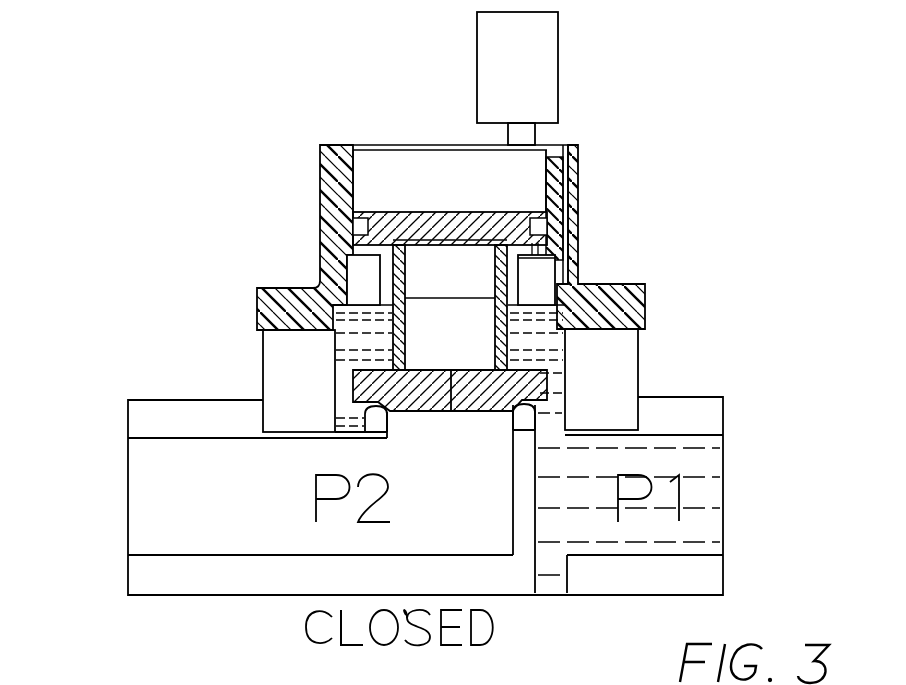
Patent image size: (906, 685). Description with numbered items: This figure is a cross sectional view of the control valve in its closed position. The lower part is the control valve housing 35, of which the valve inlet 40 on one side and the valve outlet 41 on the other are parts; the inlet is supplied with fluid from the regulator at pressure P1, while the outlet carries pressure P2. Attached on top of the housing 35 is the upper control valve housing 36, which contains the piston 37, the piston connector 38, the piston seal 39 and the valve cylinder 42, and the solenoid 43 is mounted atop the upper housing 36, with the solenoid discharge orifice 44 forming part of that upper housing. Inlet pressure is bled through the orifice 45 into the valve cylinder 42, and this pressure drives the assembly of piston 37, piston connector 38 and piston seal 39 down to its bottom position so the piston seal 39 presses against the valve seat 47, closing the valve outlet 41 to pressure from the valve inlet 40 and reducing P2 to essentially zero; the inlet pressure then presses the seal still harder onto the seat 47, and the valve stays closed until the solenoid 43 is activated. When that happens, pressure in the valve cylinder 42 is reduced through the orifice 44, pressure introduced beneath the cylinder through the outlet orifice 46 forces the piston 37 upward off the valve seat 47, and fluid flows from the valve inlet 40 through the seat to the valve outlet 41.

The control valve housing 35 is at (128, 413).
The upper control valve housing 36 is at (580, 172).
The piston 37 is at (438, 210).
The piston connector 38 is at (388, 280).
The piston seal 39 is at (352, 395).
The valve inlet 40 is at (719, 489).
The valve outlet 41 is at (133, 496).
The valve cylinder 42 is at (437, 165).
The solenoid 43 is at (558, 60).
The orifice 44 is at (537, 135).
The orifice 45 is at (567, 213).
The outlet orifice 46 is at (535, 285).
The valve seat 47 is at (363, 418).